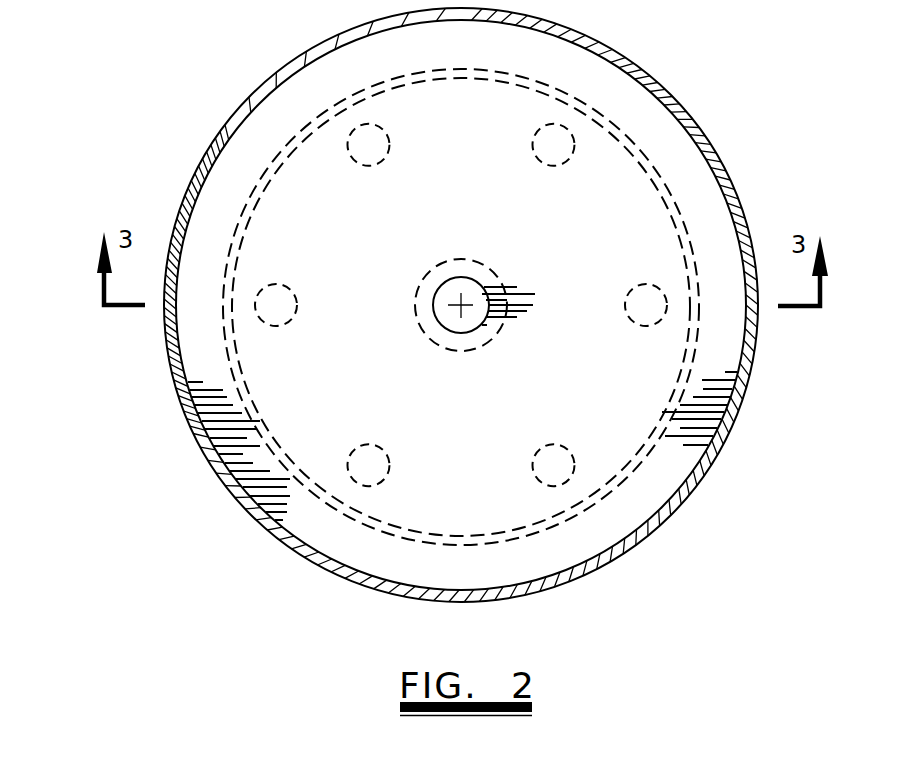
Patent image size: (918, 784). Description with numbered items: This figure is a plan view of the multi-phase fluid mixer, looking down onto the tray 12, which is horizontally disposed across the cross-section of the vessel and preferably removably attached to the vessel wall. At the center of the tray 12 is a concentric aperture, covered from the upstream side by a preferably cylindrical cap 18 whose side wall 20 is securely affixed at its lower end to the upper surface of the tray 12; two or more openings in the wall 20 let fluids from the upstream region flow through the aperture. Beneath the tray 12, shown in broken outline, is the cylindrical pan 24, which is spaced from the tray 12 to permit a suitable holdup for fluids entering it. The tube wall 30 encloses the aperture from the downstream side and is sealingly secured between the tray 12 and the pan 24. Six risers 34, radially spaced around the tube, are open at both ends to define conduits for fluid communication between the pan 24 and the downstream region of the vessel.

The tray 12 is at (642, 80).
The cap 18 is at (461, 308).
The side wall 20 is at (433, 320).
The pan 24 is at (690, 358).
The tube wall 30 is at (450, 258).
The risers 34 is at (550, 468).